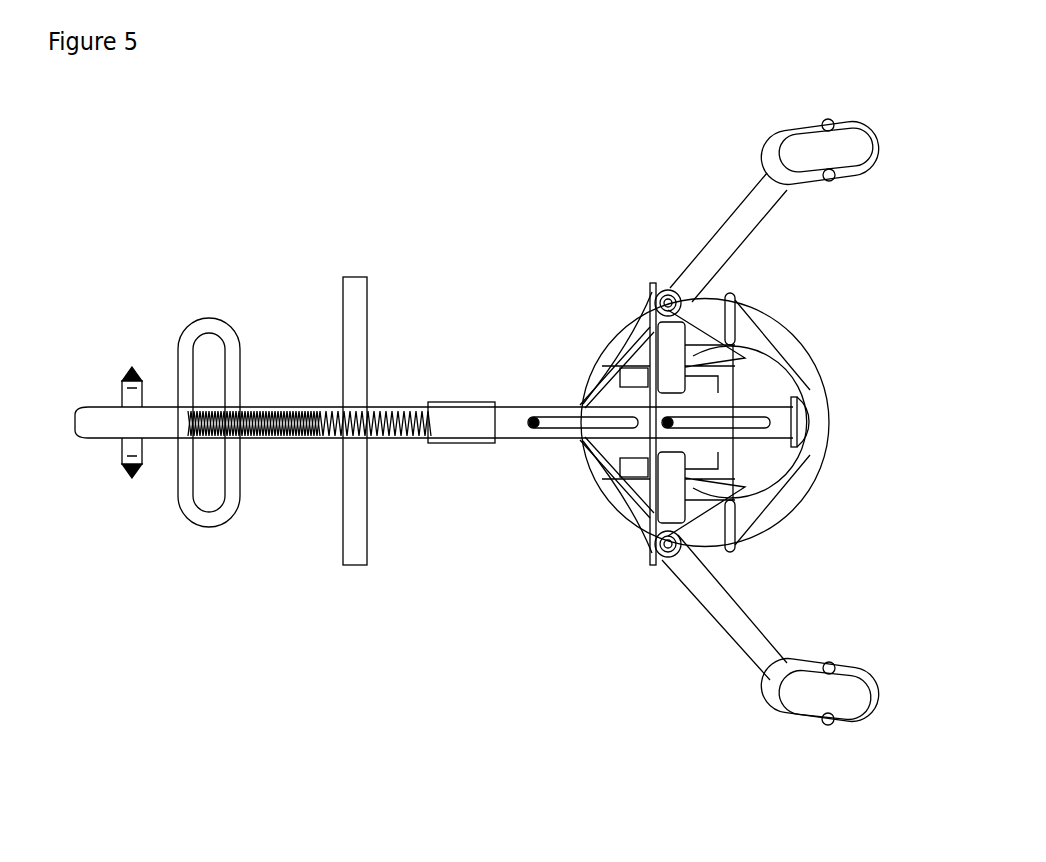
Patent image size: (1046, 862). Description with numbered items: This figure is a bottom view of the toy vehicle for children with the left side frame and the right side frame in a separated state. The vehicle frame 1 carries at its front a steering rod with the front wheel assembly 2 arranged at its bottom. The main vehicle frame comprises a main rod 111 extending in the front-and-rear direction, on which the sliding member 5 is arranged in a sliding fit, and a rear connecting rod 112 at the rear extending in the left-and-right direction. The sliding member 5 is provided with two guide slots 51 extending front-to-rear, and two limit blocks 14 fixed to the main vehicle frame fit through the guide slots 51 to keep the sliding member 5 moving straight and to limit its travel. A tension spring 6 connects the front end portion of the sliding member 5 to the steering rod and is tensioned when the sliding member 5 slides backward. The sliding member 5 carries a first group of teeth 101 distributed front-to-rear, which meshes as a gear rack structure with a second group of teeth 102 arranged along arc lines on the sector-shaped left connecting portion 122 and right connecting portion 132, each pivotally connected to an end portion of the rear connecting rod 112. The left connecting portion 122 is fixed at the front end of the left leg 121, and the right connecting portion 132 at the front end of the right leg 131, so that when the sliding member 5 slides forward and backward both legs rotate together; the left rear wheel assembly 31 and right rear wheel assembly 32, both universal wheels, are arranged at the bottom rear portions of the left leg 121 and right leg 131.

The vehicle frame 1 is at (296, 378).
The front wheel assembly 2 is at (90, 424).
The sliding member 5 is at (447, 423).
The tension spring 6 is at (262, 432).
The limit block 14 is at (530, 405).
The left rear wheel assembly 31 is at (801, 150).
The right rear wheel assembly 32 is at (820, 703).
The guide slot 51 is at (566, 440).
The first group of teeth 101 is at (788, 392).
The second group of teeth 102 is at (772, 338).
The main rod 111 is at (371, 375).
The rear connecting rod 112 is at (640, 368).
The left leg 121 is at (720, 246).
The left connecting portion 122 is at (648, 328).
The right leg 131 is at (735, 617).
The right connecting portion 132 is at (645, 528).